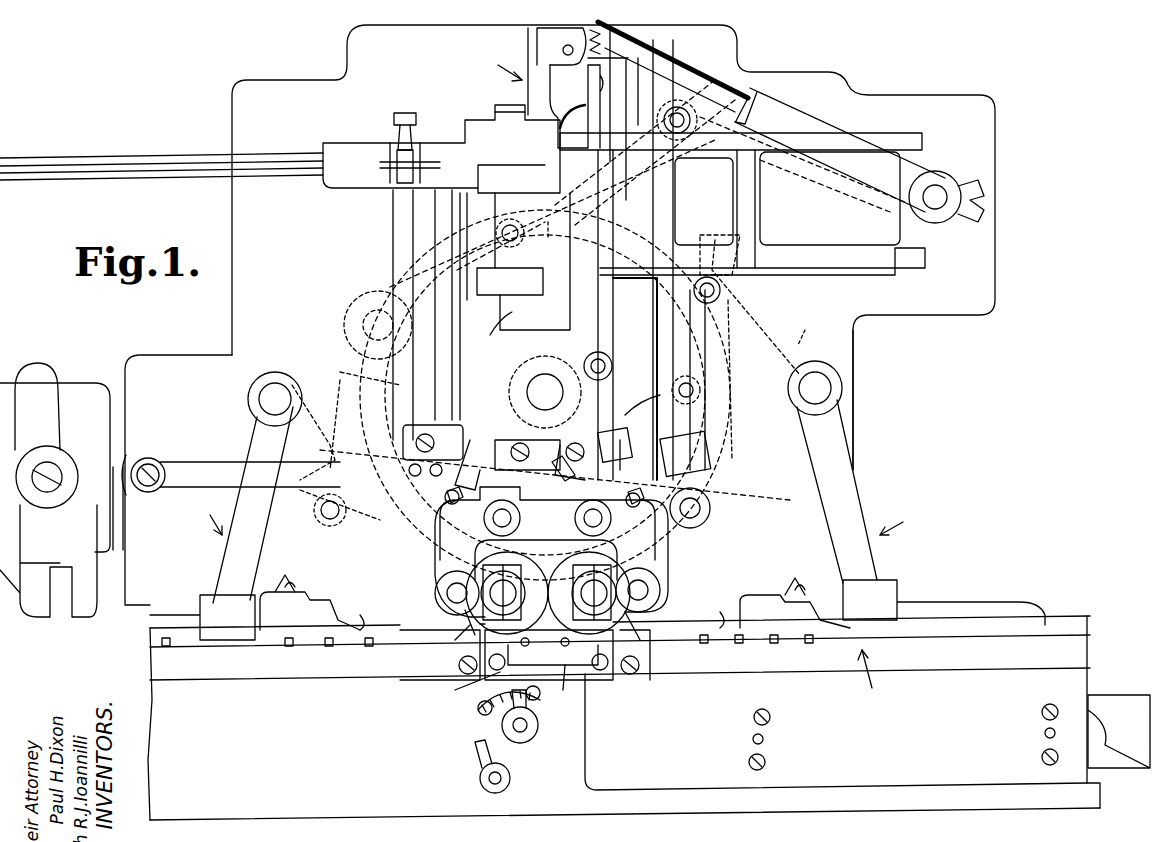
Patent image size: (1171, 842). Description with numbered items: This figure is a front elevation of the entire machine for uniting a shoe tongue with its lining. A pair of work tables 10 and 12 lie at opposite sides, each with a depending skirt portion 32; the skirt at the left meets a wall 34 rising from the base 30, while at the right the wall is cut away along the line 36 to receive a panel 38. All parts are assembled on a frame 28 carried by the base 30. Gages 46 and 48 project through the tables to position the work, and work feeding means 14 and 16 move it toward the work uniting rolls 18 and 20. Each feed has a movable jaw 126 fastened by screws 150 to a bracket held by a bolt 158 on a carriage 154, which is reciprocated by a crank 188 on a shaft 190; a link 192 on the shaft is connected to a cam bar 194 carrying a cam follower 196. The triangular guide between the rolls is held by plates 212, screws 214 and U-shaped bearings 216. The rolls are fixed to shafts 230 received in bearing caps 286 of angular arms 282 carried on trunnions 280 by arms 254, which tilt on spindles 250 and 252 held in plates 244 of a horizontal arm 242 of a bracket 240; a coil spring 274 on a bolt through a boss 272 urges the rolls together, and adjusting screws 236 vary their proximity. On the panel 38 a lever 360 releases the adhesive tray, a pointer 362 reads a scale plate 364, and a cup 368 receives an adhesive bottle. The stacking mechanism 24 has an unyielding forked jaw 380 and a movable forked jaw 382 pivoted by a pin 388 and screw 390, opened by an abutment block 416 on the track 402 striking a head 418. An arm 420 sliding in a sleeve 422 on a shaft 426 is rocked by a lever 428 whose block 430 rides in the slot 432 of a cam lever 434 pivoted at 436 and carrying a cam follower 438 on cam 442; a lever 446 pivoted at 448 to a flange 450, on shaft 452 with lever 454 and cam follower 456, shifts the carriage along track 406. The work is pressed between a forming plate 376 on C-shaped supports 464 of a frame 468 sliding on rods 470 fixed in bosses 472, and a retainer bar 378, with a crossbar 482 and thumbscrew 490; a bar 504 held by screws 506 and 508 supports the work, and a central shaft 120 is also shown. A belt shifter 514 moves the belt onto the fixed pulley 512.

The work table 10 is at (872, 678).
The work table 12 is at (272, 652).
The work feeding means 14 is at (904, 521).
The work feeding means 16 is at (207, 514).
The work uniting roll 18 is at (580, 565).
The work uniting roll 20 is at (520, 565).
The work transferring or stacking mechanism 24 is at (495, 66).
The frame 28 is at (856, 392).
The base 30 is at (1102, 797).
The skirt portion 32 is at (205, 672).
The wall 34 is at (625, 782).
The cut-away line 36 is at (632, 770).
The panel 38 is at (870, 786).
The gage 46 is at (800, 645).
The gage 48 is at (690, 628).
The shaft 120 is at (538, 388).
The movable jaw 126 is at (334, 608).
The screw 150 is at (285, 575).
The carriage 154 is at (168, 612).
The bolt 158 is at (555, 611).
The crank 188 is at (262, 545).
The shaft 190 is at (273, 398).
The link 192 is at (567, 420).
The cam bar 194 is at (340, 522).
The cam follower 196 is at (590, 355).
The plate 212 is at (555, 688).
The screw 214 is at (549, 655).
The U-shaped bearing 216 is at (458, 689).
The shaft 230 is at (545, 625).
The screw 236 is at (442, 494).
The bracket 240 is at (655, 397).
The horizontal arm 242 is at (470, 455).
The parallel spaced plate 244 is at (505, 584).
The spindle 250 is at (492, 528).
The spindle 252 is at (603, 524).
The arm 254 is at (708, 552).
The boss 272 is at (557, 469).
The coil spring 274 is at (600, 446).
The trunnion 280 is at (448, 595).
The angular arm 282 is at (438, 565).
The bearing cap 286 is at (772, 757).
The lever 360 is at (480, 758).
The pointer 362 is at (490, 710).
The scale plate 364 is at (508, 742).
The cup 368 is at (1105, 695).
The work forming plate 376 is at (489, 333).
The retainer bar 378 is at (500, 108).
The unyielding forked jaw 380 is at (540, 44).
The movable forked jaw 382 is at (548, 112).
The pin 388 is at (463, 306).
The screw 390 is at (577, 117).
The track 402 is at (680, 218).
The track 406 is at (898, 133).
The abutment block 416 is at (672, 455).
The head 418 is at (699, 79).
The arm 420 is at (780, 115).
The sleeve 422 is at (718, 58).
The shaft 426 is at (940, 194).
The lever 428 is at (825, 190).
The block 430 is at (681, 260).
The slot 432 is at (612, 218).
The cam lever 434 is at (548, 240).
The pivot 436 is at (345, 320).
The cam follower 438 is at (520, 228).
The cam 442 is at (348, 410).
The lever 446 is at (708, 428).
The pivot 448 is at (770, 325).
The flange 450 is at (738, 278).
The shaft 452 is at (712, 508).
The lever 454 is at (722, 458).
The cam follower 456 is at (700, 388).
The C-shaped support 464 is at (528, 298).
The frame 468 is at (366, 193).
The rod 470 is at (128, 158).
The boss 472 is at (511, 179).
The crossbar 482 is at (398, 152).
The thumbscrew 490 is at (410, 114).
The bar 504 is at (188, 462).
The screw 506 is at (150, 460).
The screw 508 is at (432, 468).
The fixed pulley 512 is at (48, 561).
The belt shifter 514 is at (36, 365).